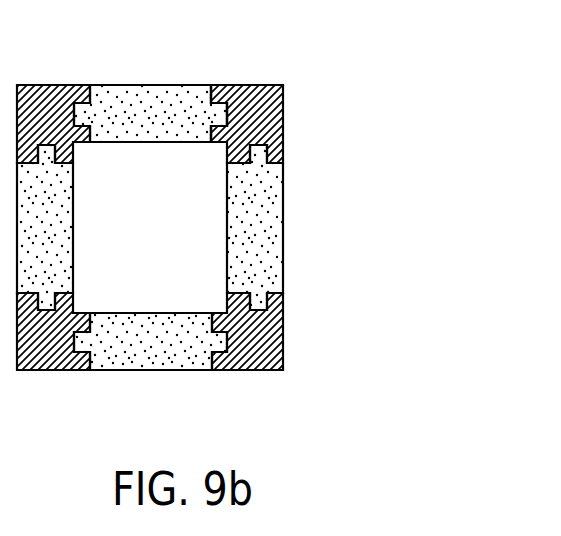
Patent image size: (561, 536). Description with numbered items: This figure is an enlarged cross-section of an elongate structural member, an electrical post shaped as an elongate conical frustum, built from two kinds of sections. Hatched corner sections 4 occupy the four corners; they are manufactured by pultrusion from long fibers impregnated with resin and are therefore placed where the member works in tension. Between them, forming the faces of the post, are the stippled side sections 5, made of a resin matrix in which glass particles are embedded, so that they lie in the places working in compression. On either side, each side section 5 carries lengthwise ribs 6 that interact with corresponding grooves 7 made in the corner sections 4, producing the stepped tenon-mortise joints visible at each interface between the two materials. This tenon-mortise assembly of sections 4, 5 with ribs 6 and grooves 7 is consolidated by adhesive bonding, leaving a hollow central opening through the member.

The corner section 4 is at (42, 86).
The side section 5 is at (144, 98).
The lengthwise rib 6 is at (220, 118).
The groove 7 is at (270, 121).